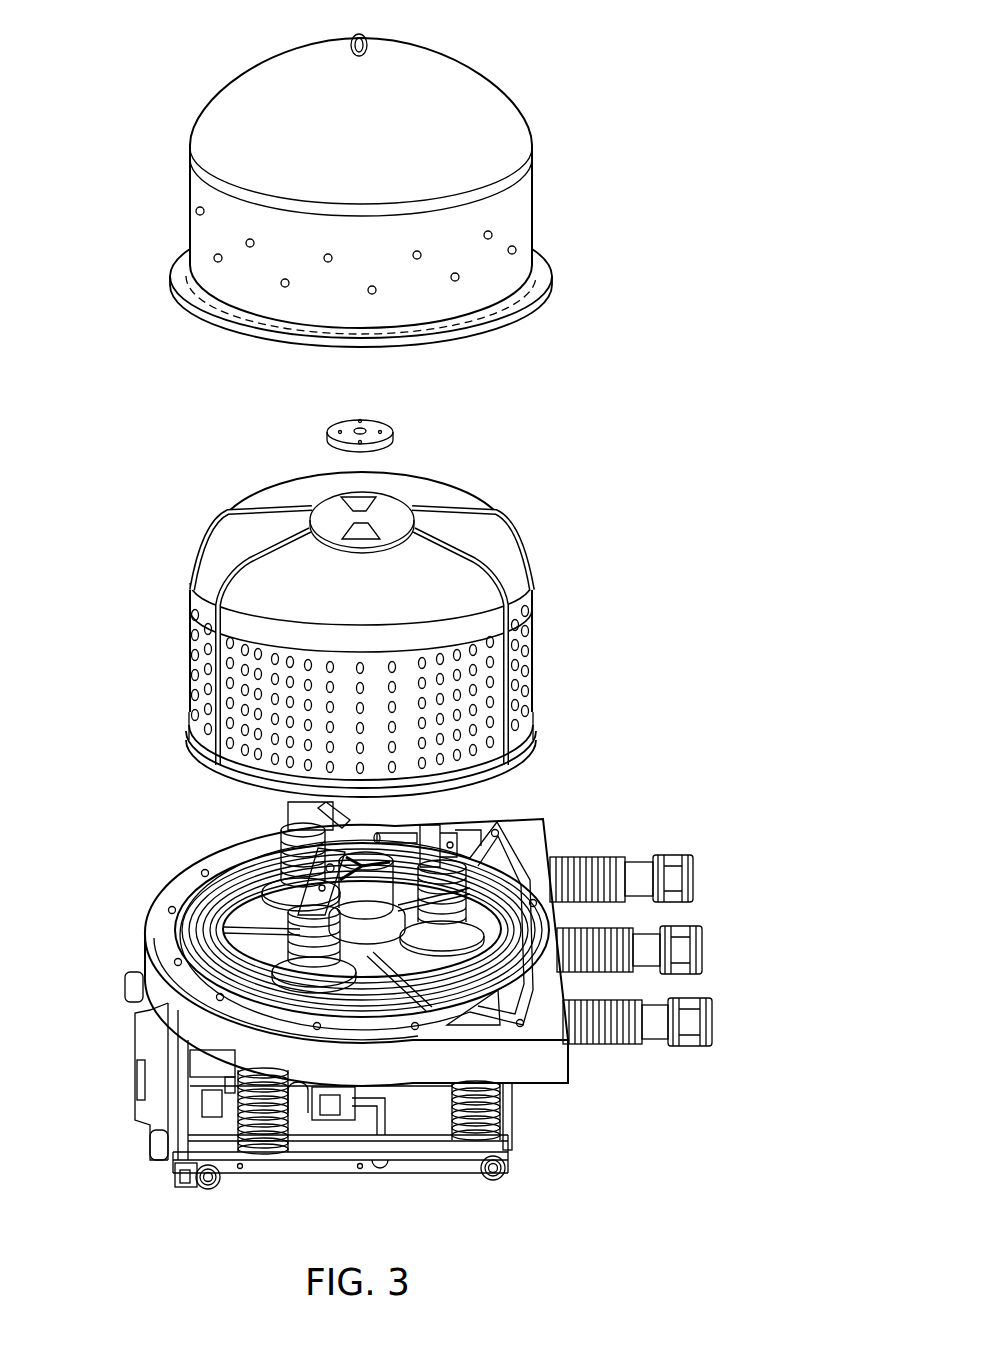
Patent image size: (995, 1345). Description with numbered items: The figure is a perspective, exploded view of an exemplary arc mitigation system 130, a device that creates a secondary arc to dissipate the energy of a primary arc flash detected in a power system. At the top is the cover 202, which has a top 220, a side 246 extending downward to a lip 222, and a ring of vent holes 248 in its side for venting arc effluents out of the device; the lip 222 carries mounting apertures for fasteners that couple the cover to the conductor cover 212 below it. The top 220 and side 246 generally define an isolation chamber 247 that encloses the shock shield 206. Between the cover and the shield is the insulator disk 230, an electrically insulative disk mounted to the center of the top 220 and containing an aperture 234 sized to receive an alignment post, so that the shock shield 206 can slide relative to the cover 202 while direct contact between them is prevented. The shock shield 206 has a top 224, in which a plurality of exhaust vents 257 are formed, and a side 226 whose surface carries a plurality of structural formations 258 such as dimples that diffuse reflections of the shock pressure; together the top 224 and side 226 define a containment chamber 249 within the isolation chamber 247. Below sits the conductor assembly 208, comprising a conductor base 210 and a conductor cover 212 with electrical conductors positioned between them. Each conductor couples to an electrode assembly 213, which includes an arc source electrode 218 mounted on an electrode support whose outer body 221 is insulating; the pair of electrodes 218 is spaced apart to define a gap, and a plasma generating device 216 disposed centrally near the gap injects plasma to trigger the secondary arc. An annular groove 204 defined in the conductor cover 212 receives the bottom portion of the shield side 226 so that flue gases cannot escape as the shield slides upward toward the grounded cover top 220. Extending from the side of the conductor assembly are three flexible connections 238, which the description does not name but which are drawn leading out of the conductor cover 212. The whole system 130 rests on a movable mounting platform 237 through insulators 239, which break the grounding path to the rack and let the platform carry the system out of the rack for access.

The arc mitigation system 130 is at (430, 620).
The cover 202 is at (407, 199).
The annular groove 204 is at (205, 978).
The shock shield 206 is at (387, 611).
The conductor assembly 208 is at (430, 1001).
The conductor base 210 is at (535, 1077).
The conductor cover 212 is at (427, 928).
The electrode assembly 213 is at (513, 1043).
The plasma generating device 216 is at (300, 815).
The arc source electrode 218 is at (393, 823).
The top 220 is at (401, 66).
The outer body 221 is at (527, 853).
The lip 222 is at (392, 304).
The top 224 is at (435, 518).
The side 226 is at (512, 668).
The insulator disk 230 is at (359, 401).
The aperture 234 is at (367, 428).
The movable mounting platform 237 is at (300, 1178).
The hoses 238 is at (655, 1047).
The insulators 239 is at (250, 1152).
The side 246 is at (414, 272).
The isolation chamber 247 is at (500, 338).
The vent holes 248 is at (327, 263).
The containment chamber 249 is at (208, 757).
The exhaust vents 257 is at (363, 537).
The structural formations 258 is at (525, 690).